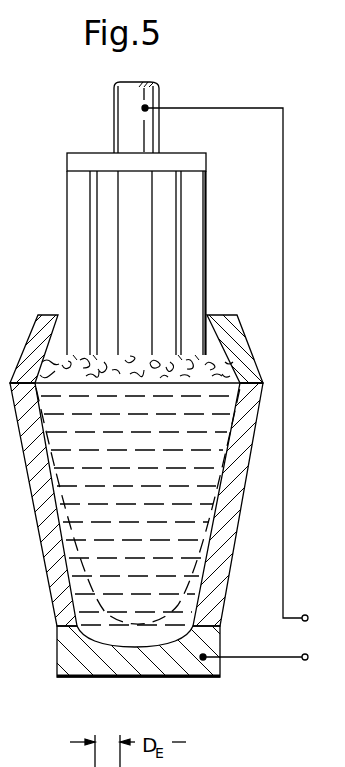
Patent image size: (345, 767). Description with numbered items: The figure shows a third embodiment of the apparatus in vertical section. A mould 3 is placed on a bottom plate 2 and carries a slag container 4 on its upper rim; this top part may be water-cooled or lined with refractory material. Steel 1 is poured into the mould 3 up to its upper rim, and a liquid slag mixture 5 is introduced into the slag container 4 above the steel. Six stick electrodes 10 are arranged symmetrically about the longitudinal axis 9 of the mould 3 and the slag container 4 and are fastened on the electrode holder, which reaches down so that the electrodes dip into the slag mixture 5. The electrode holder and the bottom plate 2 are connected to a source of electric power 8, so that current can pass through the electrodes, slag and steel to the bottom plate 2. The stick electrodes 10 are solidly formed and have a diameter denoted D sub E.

The steel 1 is at (170, 565).
The bottom plate 2 is at (167, 667).
The mould 3 is at (235, 485).
The slag container 4 is at (237, 345).
The liquid slag mixture 5 is at (215, 370).
The source of electric power 8 is at (227, 382).
The longitudinal axis 9 is at (190, 426).
The stick electrodes 10 is at (191, 239).